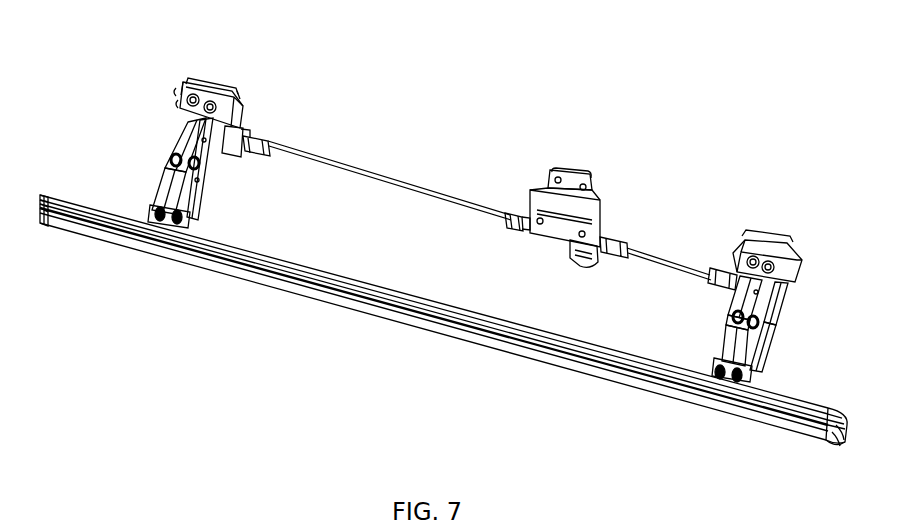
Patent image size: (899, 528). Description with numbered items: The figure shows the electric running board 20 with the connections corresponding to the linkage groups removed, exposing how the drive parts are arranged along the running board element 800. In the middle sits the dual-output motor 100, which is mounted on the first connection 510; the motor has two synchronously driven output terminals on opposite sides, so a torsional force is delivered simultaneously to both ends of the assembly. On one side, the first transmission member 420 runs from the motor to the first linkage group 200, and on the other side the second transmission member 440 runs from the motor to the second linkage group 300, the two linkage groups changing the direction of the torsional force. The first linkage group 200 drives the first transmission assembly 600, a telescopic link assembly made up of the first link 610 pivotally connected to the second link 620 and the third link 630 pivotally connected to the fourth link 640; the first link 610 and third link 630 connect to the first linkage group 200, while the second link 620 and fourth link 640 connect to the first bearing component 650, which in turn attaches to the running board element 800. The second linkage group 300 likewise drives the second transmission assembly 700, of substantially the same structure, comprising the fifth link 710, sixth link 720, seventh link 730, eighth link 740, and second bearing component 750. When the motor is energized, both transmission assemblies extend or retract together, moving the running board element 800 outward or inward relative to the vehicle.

The electric running board 20 is at (459, 42).
The dual-output motor 100 is at (578, 260).
The first linkage group 200 is at (763, 243).
The second linkage group 300 is at (236, 90).
The first transmission member 420 is at (642, 253).
The second transmission member 440 is at (343, 172).
The first connection 510 is at (568, 180).
The first transmission assembly 600 is at (207, 300).
The first link 610 is at (770, 307).
The second link 620 is at (757, 350).
The third link 630 is at (733, 293).
The fourth link 640 is at (730, 337).
The first bearing component 650 is at (717, 360).
The second transmission assembly 700 is at (81, 300).
The fifth link 710 is at (215, 157).
The sixth link 720 is at (200, 190).
The seventh link 730 is at (178, 127).
The eighth link 740 is at (167, 160).
The second bearing component 750 is at (163, 200).
The running board element 800 is at (420, 292).